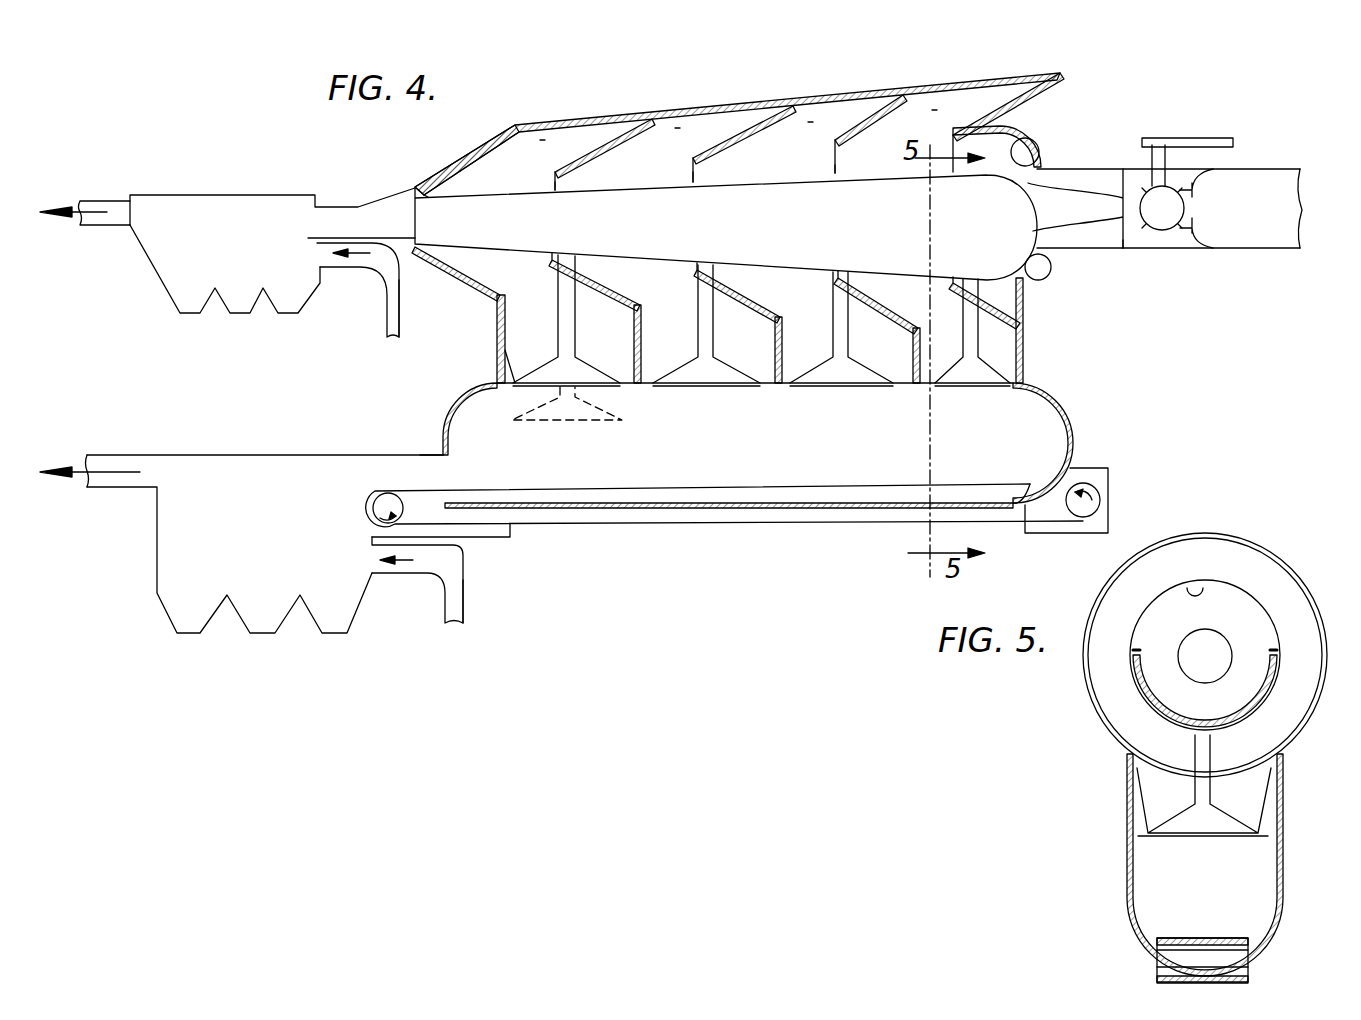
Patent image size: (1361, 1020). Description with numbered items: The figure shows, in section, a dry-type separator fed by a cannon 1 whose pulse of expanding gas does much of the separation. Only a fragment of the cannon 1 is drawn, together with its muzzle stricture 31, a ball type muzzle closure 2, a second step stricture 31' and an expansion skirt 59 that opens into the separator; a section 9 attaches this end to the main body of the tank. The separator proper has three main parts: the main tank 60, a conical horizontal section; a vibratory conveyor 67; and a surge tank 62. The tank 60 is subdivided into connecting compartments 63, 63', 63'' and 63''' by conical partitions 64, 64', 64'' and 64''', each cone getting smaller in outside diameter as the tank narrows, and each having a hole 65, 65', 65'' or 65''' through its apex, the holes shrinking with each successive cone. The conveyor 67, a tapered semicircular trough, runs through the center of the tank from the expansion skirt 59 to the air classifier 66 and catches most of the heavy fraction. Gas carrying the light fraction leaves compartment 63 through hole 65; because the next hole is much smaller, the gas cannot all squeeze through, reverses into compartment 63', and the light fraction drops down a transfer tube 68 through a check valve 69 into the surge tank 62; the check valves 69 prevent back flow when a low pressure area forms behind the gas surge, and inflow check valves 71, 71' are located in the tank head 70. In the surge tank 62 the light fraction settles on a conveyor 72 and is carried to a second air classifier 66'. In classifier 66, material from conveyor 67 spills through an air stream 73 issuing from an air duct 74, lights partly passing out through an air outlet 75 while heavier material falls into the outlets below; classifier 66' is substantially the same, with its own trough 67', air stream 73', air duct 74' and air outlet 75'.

In FIG. 4, the cannon 1 is at (1286, 168).
In FIG. 4, the ball type muzzle closure 2 is at (1165, 223).
In FIG. 4, the section 9 is at (1118, 253).
In FIG. 4, the muzzle stricture 31 is at (1223, 210).
In FIG. 4, the second step stricture 31' is at (1164, 163).
In FIG. 4, the expansion skirt 59 is at (1098, 196).
In FIG. 4, the main tank 60 is at (1002, 75).
In FIG. 5, the main tank 60 is at (1298, 582).
In FIG. 4, the surge tank 62 is at (1063, 393).
In FIG. 5, the surge tank 62 is at (1282, 930).
In FIG. 4, the compartment 63 is at (943, 112).
In FIG. 4, the compartment 63' is at (824, 123).
In FIG. 4, the compartment 63'' is at (693, 129).
In FIG. 4, the compartment 63''' is at (563, 141).
In FIG. 4, the conical partition 64 is at (872, 134).
In FIG. 5, the conical partition 64 is at (1223, 655).
In FIG. 4, the conical partition 64' is at (747, 144).
In FIG. 4, the conical partition 64'' is at (616, 154).
In FIG. 4, the conical partition 64''' is at (486, 160).
In FIG. 4, the hole 65 is at (864, 166).
In FIG. 5, the hole 65 is at (1190, 574).
In FIG. 4, the hole 65' is at (728, 173).
In FIG. 4, the hole 65'' is at (590, 180).
In FIG. 4, the hole 65''' is at (466, 183).
In FIG. 4, the air classifier 66 is at (272, 220).
In FIG. 4, the air classifier 66' is at (265, 520).
In FIG. 4, the vibratory conveyor 67 is at (692, 219).
In FIG. 5, the vibratory conveyor 67 is at (1205, 688).
In FIG. 4, the tapered nozzle tube 67' is at (406, 436).
In FIG. 4, the transfer tube 68 is at (737, 287).
In FIG. 4, the check valve 69 is at (857, 390).
In FIG. 5, the check valve 69 is at (1196, 840).
In FIG. 4, the tank head 70 is at (1040, 166).
In FIG. 4, the inflow check valve 71 is at (1025, 136).
In FIG. 4, the bulge 71' is at (1052, 289).
In FIG. 4, the conveyor 72 is at (739, 492).
In FIG. 5, the conveyor 72 is at (1210, 938).
In FIG. 4, the air stream 73 is at (361, 287).
In FIG. 4, the return channel 73' is at (417, 580).
In FIG. 4, the air duct 74 is at (429, 308).
In FIG. 4, the return duct 74' is at (493, 598).
In FIG. 4, the air outlet 75 is at (88, 190).
In FIG. 4, the outlet pipe 75' is at (95, 453).